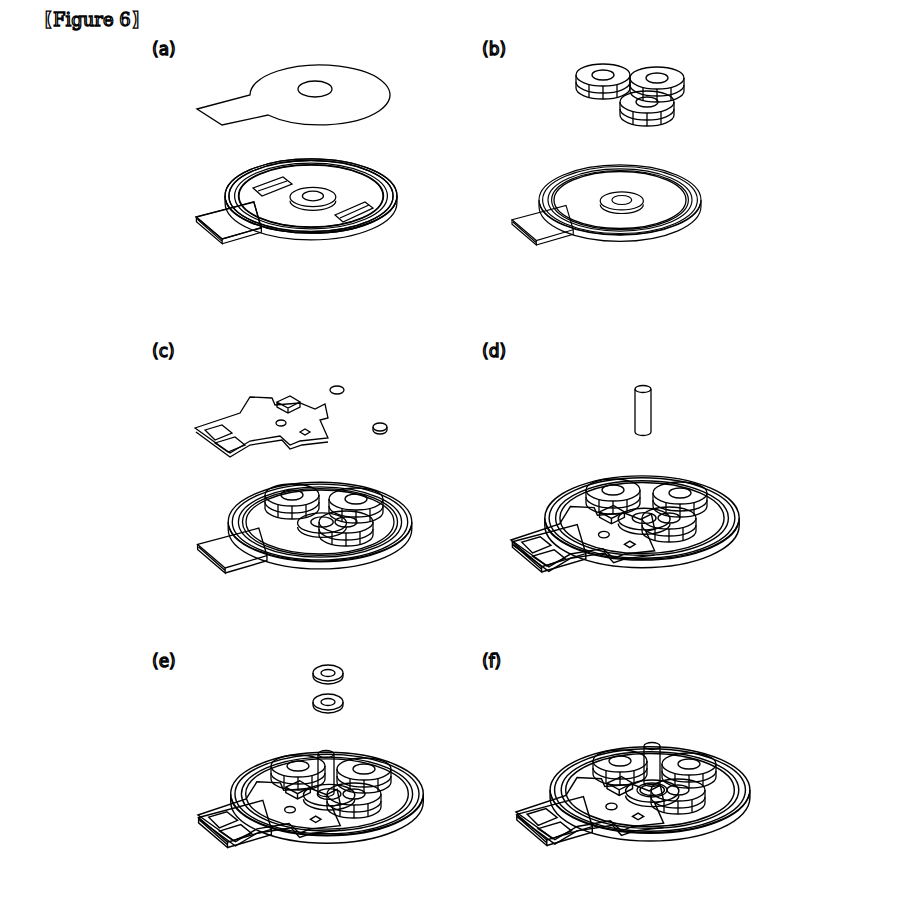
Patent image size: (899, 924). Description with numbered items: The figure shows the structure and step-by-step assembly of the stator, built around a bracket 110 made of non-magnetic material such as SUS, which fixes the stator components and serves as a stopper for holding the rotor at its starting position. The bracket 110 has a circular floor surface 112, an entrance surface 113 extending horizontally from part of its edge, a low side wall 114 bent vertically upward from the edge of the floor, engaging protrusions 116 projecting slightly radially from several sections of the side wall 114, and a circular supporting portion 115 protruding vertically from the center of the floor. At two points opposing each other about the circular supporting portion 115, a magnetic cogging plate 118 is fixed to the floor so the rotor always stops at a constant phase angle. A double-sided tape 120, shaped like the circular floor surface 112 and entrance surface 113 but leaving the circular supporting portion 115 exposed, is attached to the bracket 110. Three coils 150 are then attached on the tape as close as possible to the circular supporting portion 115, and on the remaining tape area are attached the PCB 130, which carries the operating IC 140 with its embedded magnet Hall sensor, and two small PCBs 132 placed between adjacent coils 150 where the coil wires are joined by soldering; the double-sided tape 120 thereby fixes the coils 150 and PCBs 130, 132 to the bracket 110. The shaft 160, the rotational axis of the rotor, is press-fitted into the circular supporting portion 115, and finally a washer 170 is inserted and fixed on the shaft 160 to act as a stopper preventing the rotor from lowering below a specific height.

The bracket 110 is at (395, 220).
The circular floor surface 112 is at (342, 178).
The entrance surface 113 is at (217, 226).
The side wall 114 is at (392, 196).
The circular supporting portion 115 is at (312, 205).
The engaging protrusions 116 is at (237, 177).
The cogging plate 118 is at (258, 200).
The double-sided tape 120 is at (382, 85).
The PCB 130 is at (233, 412).
The small PCBs 132 is at (383, 423).
The operating IC 140 is at (290, 393).
The coils 150 is at (672, 72).
The shaft 160 is at (660, 408).
The washer 170 is at (345, 700).